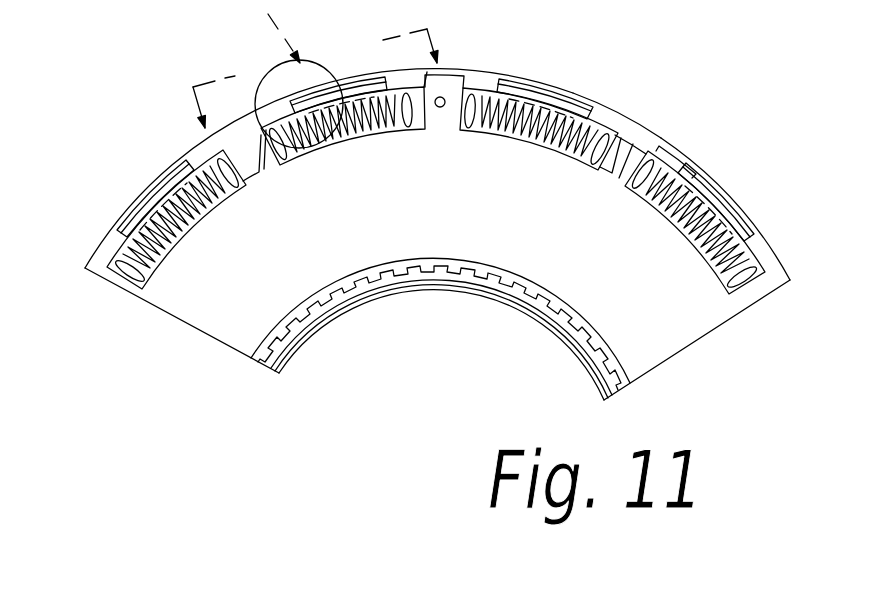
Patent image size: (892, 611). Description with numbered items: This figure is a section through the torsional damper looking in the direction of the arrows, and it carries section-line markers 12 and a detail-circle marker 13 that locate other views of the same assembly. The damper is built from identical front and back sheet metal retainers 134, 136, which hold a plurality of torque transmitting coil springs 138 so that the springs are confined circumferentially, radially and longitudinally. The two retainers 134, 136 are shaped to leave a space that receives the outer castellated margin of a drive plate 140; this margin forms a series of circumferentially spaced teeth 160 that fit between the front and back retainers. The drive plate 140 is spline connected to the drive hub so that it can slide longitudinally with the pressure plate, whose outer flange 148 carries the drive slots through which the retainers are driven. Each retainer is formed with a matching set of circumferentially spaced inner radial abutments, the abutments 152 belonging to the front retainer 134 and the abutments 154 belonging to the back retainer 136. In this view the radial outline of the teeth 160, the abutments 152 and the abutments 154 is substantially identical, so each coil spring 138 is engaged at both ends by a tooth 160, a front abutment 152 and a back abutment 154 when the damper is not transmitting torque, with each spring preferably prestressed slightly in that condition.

The section line 12- 12 is at (314, 66).
The detail circle 13 is at (280, 74).
The front sheet metal retainer 134 is at (108, 257).
The back sheet metal retainer 136 is at (603, 115).
The torque transmitting coil spring 138 is at (192, 232).
The drive plate 140 is at (463, 218).
The outer flange 148 is at (157, 183).
The inner radial abutment 152 is at (618, 170).
The inner radial abutment 154 is at (257, 167).
The tooth 160 is at (465, 85).